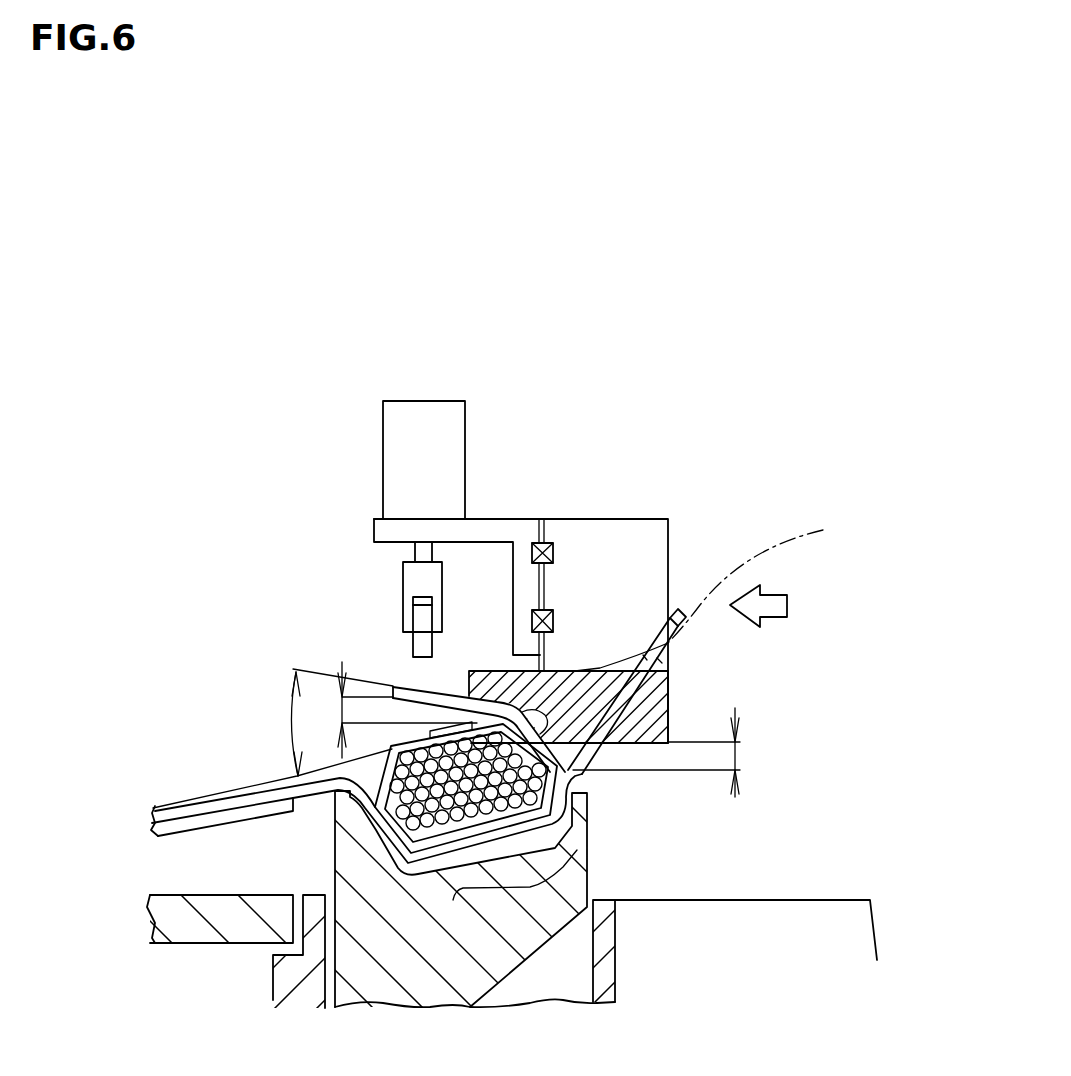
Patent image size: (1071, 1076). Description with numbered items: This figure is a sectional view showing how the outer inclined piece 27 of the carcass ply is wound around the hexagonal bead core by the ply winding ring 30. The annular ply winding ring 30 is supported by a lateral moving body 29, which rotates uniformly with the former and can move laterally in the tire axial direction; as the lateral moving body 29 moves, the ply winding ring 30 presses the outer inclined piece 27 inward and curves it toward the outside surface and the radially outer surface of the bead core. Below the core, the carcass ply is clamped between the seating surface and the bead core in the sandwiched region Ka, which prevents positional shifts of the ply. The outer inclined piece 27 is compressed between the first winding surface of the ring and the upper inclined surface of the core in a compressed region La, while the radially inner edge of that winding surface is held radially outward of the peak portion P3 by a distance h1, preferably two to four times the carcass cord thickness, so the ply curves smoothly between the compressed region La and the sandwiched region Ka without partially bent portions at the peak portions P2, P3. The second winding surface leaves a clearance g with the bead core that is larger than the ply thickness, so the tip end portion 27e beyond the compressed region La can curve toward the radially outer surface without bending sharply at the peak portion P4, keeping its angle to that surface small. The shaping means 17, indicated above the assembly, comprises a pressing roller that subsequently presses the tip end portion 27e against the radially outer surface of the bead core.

The shaping means 17 is at (362, 450).
The outer inclined piece 27 is at (823, 530).
The tip end portion 27e is at (437, 677).
The lateral moving body 29 is at (627, 538).
The ply winding ring 30 is at (640, 693).
The compressed region La is at (668, 645).
The peak portion (tire-axially outer edge of radially outer surface) P4 is at (512, 712).
The peak portion P3 is at (568, 772).
The peak portion (tire-axially outer edge of radially inner surface) P2 is at (547, 831).
The sandwiched region Ka is at (357, 868).
The distance h1 is at (674, 752).
The clearance g is at (396, 710).